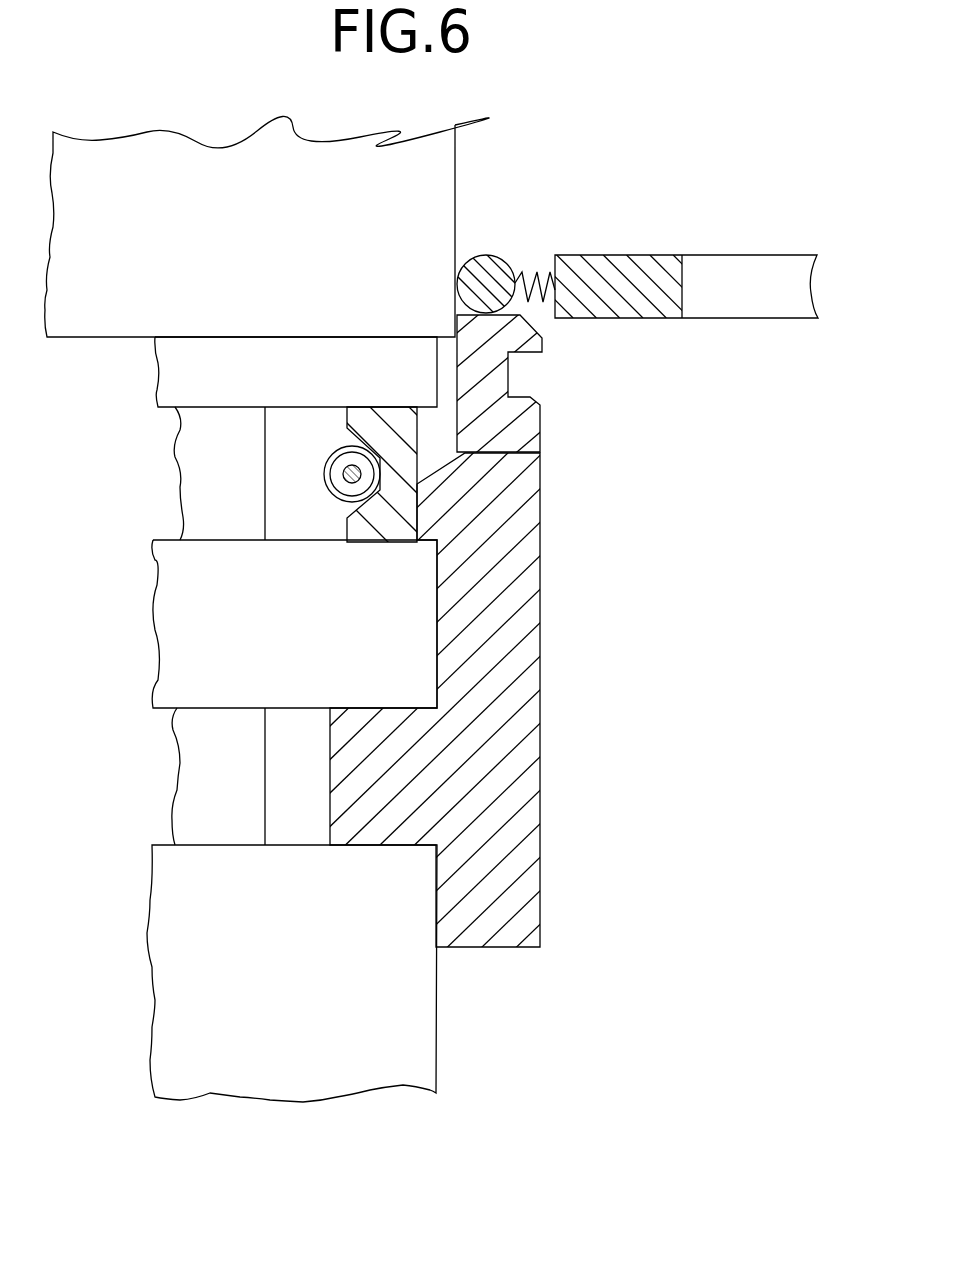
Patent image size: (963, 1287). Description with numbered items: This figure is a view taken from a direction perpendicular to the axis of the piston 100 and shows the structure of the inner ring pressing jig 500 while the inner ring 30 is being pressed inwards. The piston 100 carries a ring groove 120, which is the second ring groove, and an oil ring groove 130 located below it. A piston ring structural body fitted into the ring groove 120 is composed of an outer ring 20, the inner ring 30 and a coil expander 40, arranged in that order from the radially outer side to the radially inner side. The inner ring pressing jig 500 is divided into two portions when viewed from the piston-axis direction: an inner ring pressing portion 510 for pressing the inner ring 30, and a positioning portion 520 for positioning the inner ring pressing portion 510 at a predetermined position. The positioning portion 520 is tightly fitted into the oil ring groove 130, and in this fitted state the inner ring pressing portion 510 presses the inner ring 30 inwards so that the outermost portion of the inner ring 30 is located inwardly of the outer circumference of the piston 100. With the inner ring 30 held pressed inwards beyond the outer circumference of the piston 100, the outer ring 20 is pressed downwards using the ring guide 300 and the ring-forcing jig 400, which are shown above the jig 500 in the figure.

The outer ring 20 is at (520, 422).
The inner ring 30 is at (388, 515).
The coil expander 40 is at (324, 490).
The piston 100 is at (441, 1046).
The ring groove 120 is at (283, 478).
The oil ring groove 130 is at (270, 783).
The ring guide 300 is at (428, 183).
The ring-forcing jig 400 is at (707, 254).
The inner ring pressing jig 500 is at (476, 695).
The inner ring pressing portion 510 is at (450, 515).
The positioning portion 520 is at (407, 790).